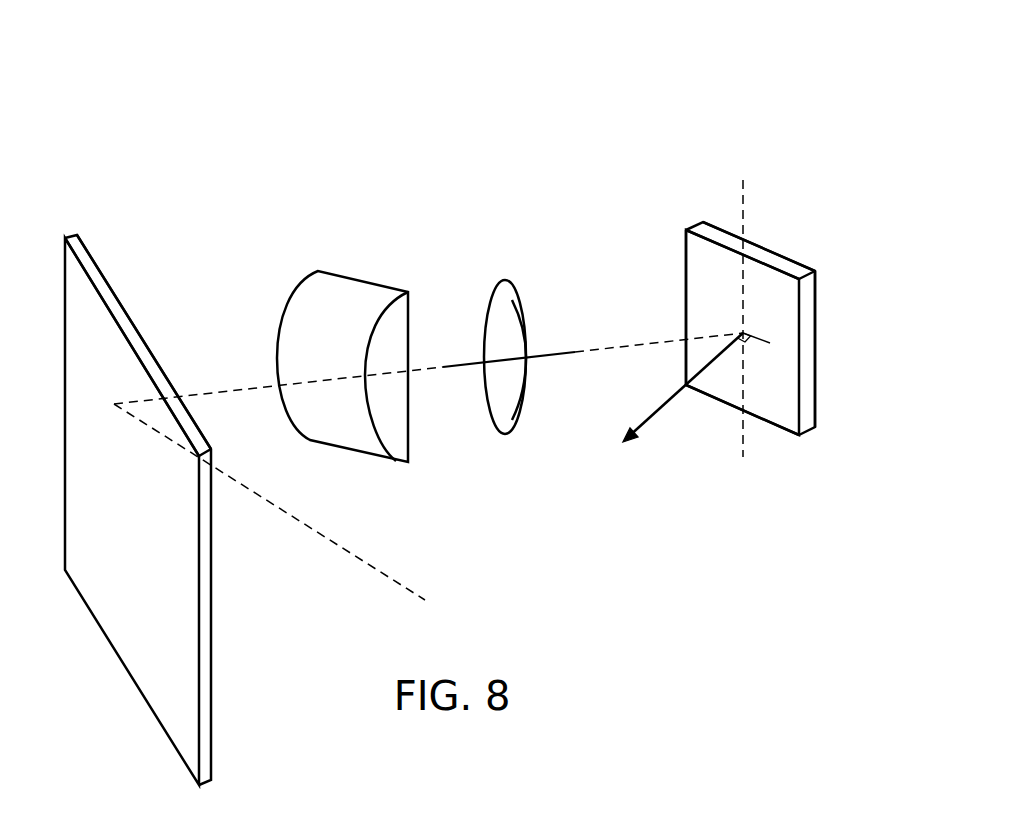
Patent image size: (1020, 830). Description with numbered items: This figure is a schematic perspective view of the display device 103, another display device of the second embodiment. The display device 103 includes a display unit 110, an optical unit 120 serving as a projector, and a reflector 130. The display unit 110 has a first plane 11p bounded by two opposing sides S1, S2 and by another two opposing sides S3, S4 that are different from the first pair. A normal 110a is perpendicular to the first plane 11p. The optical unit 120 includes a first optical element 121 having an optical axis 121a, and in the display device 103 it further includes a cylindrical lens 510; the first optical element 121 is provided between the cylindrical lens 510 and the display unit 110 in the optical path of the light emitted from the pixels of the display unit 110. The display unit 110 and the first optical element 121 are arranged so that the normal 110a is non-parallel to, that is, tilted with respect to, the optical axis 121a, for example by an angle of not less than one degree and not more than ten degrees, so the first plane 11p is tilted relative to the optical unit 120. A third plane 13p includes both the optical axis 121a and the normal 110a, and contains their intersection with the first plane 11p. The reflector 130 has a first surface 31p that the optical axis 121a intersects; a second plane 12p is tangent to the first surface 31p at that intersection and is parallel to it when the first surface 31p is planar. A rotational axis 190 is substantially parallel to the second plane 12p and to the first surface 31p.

The display device 103 is at (786, 99).
The reflector 130 is at (65, 272).
The second plane 12p is at (107, 341).
The first surface 31p is at (125, 362).
The optical unit 120 is at (487, 167).
The cylindrical lens 510 is at (367, 283).
The first optical element 121 is at (505, 282).
The optical axis 121a is at (543, 357).
The display unit 110 is at (685, 265).
The normal 110a is at (710, 362).
The side S1 is at (686, 305).
The side S2 is at (812, 355).
The side S3 is at (768, 428).
The side S4 is at (774, 293).
The first plane 11p is at (785, 260).
The third plane 13p is at (638, 377).
The rotational axis 190 is at (743, 212).